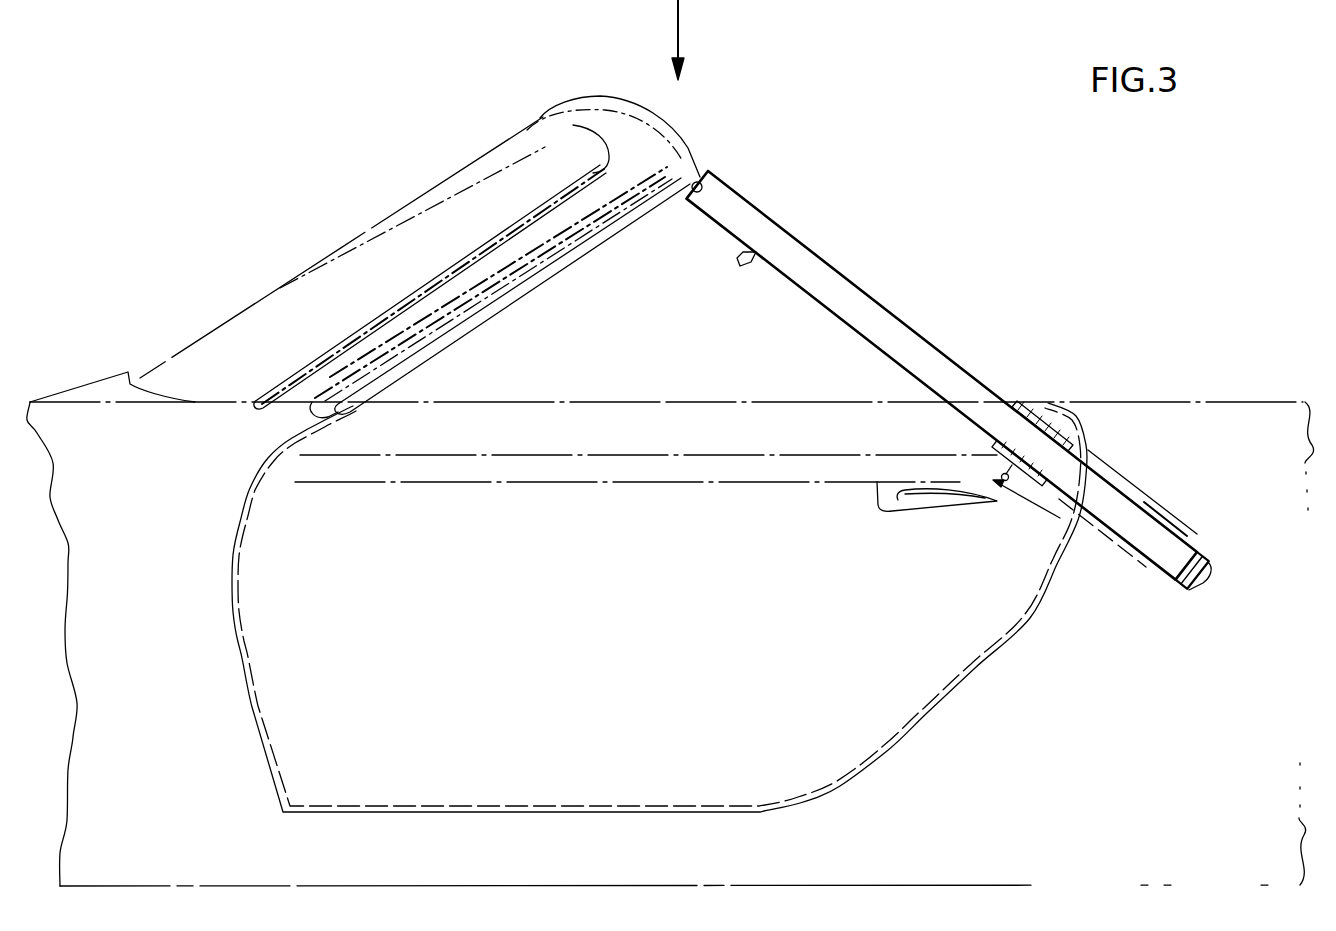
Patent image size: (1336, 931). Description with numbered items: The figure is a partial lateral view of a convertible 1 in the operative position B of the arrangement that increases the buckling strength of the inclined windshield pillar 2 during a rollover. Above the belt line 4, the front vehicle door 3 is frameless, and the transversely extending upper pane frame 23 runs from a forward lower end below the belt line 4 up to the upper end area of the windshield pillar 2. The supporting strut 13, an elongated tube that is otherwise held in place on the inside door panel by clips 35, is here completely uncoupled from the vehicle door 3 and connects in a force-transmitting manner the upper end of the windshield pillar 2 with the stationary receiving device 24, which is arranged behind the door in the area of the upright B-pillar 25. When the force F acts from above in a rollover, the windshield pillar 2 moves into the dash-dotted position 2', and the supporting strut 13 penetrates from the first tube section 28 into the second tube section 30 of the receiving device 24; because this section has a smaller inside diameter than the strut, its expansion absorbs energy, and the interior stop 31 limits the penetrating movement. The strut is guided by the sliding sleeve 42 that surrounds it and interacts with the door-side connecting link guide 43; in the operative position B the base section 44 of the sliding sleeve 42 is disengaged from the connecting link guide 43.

The convertible 1 is at (565, 98).
The windshield pillar 2 is at (460, 258).
The position of the windshield pillar 2' is at (550, 260).
The front vehicle door 3 is at (933, 721).
The belt line 4 is at (1206, 401).
The supporting strut 13 is at (876, 300).
The upper pane frame 23 is at (603, 93).
The receiving device 24 is at (1176, 519).
The B-pillar 25 is at (1154, 596).
The first tube section 28 is at (1128, 484).
The second tube section 30 is at (1202, 544).
The stop 31 is at (1213, 586).
The clips 35 is at (738, 272).
The sliding sleeve 42 is at (1030, 420).
The connecting link guide 43 is at (910, 496).
The base section 44 is at (1012, 485).
The operative position B is at (953, 353).
The force F is at (688, 40).